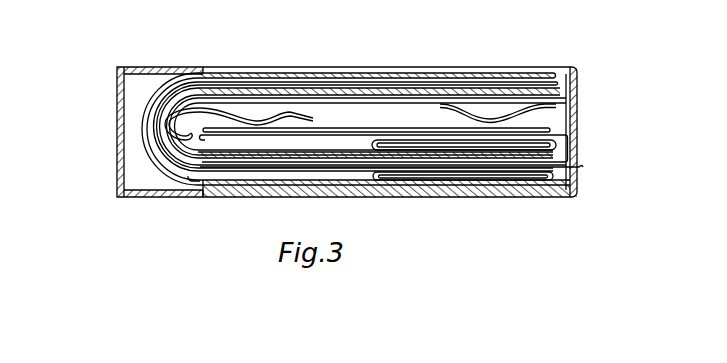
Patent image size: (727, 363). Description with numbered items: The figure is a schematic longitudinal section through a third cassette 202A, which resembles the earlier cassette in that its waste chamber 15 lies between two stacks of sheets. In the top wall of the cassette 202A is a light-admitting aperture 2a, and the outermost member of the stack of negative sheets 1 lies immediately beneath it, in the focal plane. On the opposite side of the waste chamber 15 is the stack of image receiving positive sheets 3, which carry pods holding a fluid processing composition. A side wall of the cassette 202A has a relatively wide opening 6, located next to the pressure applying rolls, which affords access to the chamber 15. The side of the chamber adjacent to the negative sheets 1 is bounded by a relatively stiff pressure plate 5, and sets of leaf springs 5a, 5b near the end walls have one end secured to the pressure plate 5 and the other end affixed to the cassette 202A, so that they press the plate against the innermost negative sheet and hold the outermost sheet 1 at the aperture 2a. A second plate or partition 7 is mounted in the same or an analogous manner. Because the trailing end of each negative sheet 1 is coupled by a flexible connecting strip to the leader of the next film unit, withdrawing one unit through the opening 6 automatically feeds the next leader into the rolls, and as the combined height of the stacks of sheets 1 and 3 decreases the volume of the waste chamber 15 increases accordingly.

The negative sheets 1 is at (312, 86).
The light-admitting aperture 2a is at (455, 78).
The image receiving positive sheets 3 is at (360, 153).
The pressure plate 5 is at (365, 93).
The leaf spring 5a is at (458, 118).
The leaf spring 5b is at (304, 117).
The opening 6 is at (576, 140).
The second plate or partition 7 is at (401, 128).
The waste chamber 15 is at (562, 118).
The cassette 202A is at (122, 122).